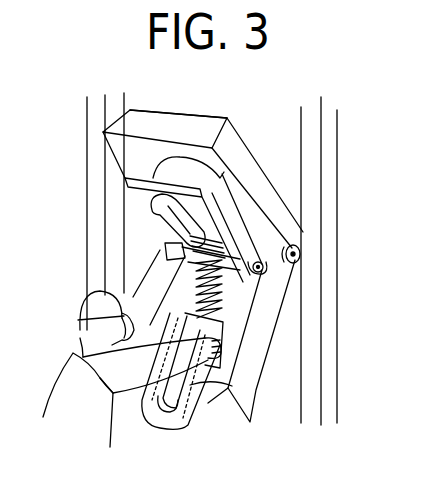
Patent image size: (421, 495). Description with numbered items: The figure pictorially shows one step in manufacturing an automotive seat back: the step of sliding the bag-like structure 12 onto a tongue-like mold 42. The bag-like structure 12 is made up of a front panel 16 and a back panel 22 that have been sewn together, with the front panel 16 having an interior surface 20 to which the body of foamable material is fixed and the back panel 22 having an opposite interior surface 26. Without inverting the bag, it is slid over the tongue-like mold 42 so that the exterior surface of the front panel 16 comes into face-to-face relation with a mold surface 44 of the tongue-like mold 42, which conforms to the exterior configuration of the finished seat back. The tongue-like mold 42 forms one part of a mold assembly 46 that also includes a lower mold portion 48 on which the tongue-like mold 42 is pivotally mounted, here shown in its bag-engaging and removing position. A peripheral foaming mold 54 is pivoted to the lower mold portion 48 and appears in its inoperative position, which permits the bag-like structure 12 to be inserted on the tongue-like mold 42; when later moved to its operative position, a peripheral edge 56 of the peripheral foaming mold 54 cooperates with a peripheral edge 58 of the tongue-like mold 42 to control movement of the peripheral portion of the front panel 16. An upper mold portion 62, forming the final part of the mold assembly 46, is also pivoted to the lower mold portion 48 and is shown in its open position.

The bag-like structure 12 is at (178, 440).
The front panel 16 is at (118, 408).
The interior surface 20 is at (160, 288).
The back panel 22 is at (183, 430).
The interior surface 26 is at (213, 404).
The tongue-like mold 42 is at (165, 260).
The mold surface 44 is at (245, 313).
The mold assembly 46 is at (252, 148).
The lower mold portion 48 is at (267, 348).
The peripheral foaming mold 54 is at (138, 193).
The peripheral edge 56 is at (163, 241).
The peripheral edge 58 is at (235, 295).
The upper mold portion 62 is at (168, 126).